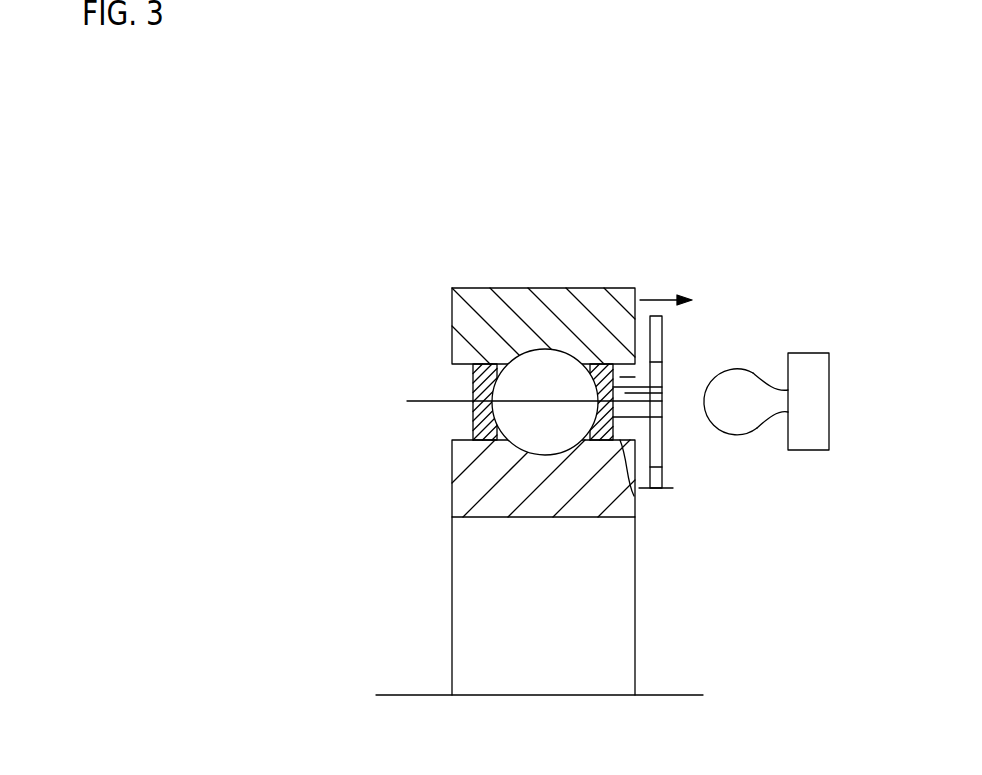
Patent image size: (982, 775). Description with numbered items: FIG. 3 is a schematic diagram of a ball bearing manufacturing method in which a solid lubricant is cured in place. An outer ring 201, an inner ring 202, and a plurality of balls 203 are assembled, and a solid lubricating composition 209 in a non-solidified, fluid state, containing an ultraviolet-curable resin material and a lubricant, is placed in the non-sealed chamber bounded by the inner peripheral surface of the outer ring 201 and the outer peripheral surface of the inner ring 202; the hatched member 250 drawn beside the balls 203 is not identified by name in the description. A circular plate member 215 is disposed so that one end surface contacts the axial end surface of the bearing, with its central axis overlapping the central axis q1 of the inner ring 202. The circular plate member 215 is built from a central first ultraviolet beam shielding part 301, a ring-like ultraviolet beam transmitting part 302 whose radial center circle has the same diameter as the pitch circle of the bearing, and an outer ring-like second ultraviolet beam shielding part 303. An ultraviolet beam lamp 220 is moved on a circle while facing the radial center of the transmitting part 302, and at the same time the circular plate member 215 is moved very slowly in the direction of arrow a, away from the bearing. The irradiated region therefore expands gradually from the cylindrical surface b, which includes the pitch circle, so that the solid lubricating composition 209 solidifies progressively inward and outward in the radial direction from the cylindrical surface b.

The outer ring 201 is at (560, 317).
The inner ring 202 is at (543, 493).
The balls 203 is at (512, 413).
The cage 250 is at (613, 387).
The circular plate member 215 is at (660, 343).
The first ultraviolet beam shielding part 301 is at (657, 467).
The ultraviolet beam transmitting part 302 is at (655, 402).
The second ultraviolet beam shielding part 303 is at (658, 364).
The solid lubricating composition 209 is at (634, 496).
The ultraviolet beam lamp 220 is at (732, 415).
The arrow a is at (658, 297).
The cylindrical surface b is at (428, 400).
The central axis q1 is at (663, 696).